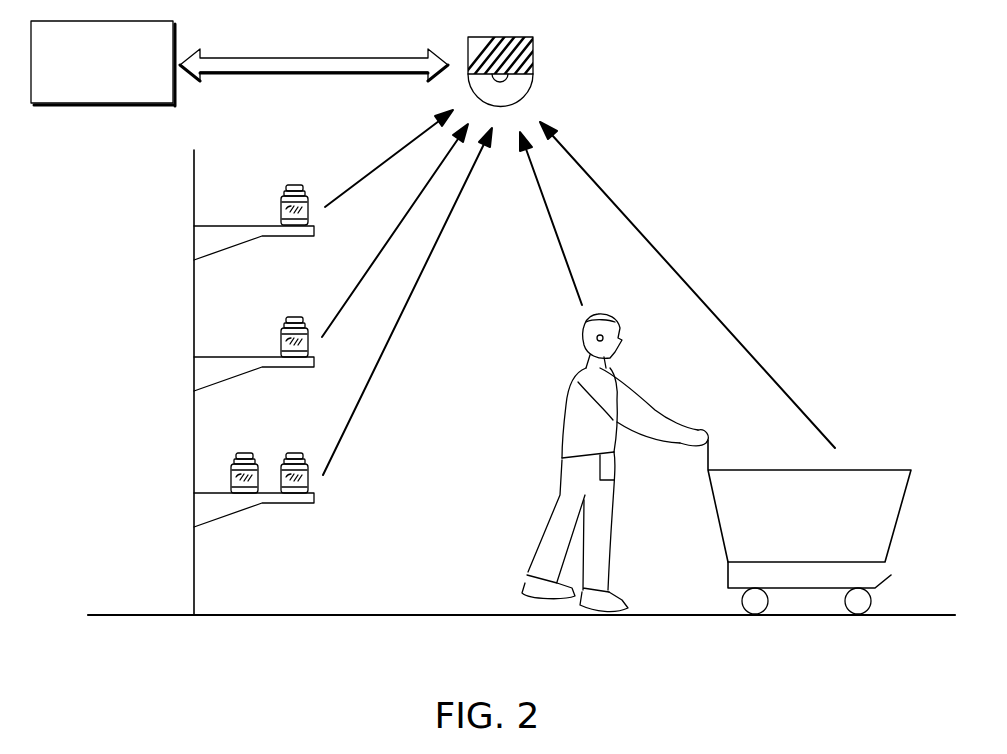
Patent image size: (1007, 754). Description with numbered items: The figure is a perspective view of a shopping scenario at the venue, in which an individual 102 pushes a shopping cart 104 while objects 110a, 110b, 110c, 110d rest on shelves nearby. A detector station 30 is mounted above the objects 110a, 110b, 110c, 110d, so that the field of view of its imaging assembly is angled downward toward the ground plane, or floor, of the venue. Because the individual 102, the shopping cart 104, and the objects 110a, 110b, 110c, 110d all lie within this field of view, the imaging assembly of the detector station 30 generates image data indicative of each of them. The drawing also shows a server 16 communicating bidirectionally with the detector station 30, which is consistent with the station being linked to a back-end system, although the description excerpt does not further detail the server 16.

The server 16 is at (103, 106).
The detector station 30 is at (533, 60).
The object 110a is at (281, 207).
The object 110b is at (283, 340).
The object 110c is at (303, 455).
The object 110d is at (238, 455).
The individual 102 is at (565, 410).
The shopping cart 104 is at (718, 518).